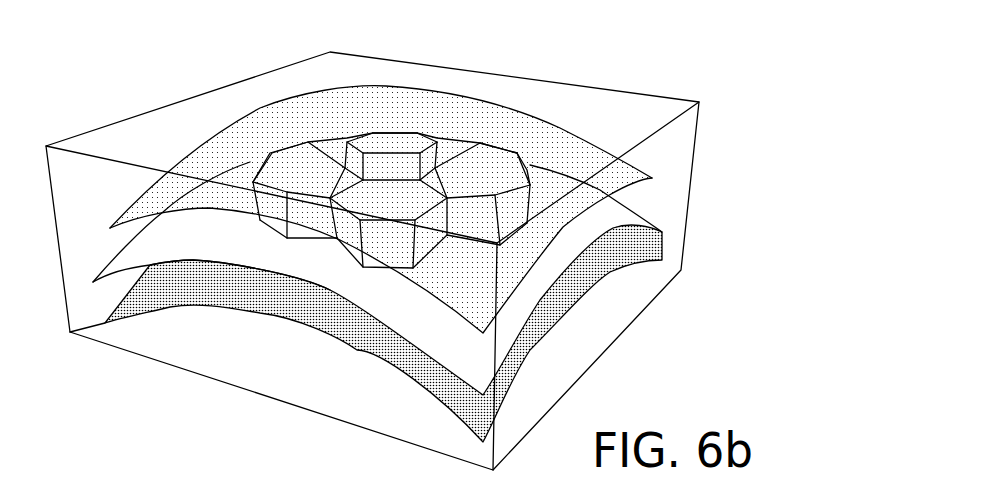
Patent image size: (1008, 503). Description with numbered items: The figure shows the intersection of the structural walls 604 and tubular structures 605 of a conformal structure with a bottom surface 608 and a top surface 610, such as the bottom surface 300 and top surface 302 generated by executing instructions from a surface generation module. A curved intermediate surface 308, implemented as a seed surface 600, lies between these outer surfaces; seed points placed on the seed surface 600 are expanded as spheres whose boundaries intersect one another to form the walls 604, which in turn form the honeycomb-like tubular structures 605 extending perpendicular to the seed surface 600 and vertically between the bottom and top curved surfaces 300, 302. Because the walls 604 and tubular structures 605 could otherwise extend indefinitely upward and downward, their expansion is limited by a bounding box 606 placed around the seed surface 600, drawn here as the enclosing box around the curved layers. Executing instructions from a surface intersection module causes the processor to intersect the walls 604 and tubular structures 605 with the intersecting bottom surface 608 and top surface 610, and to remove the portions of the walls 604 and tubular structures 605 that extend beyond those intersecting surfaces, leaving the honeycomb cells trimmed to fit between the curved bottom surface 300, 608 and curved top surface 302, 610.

The bottom surface 300 is at (366, 333).
The top surface 302 is at (362, 209).
The intermediate surface 308 is at (362, 226).
The seed surface 600 is at (125, 266).
The structural walls 604 is at (423, 220).
The tubular structures 605 is at (528, 175).
The bounding box 606 is at (697, 148).
The bottom surface 608 is at (217, 297).
The top surface 610 is at (132, 207).